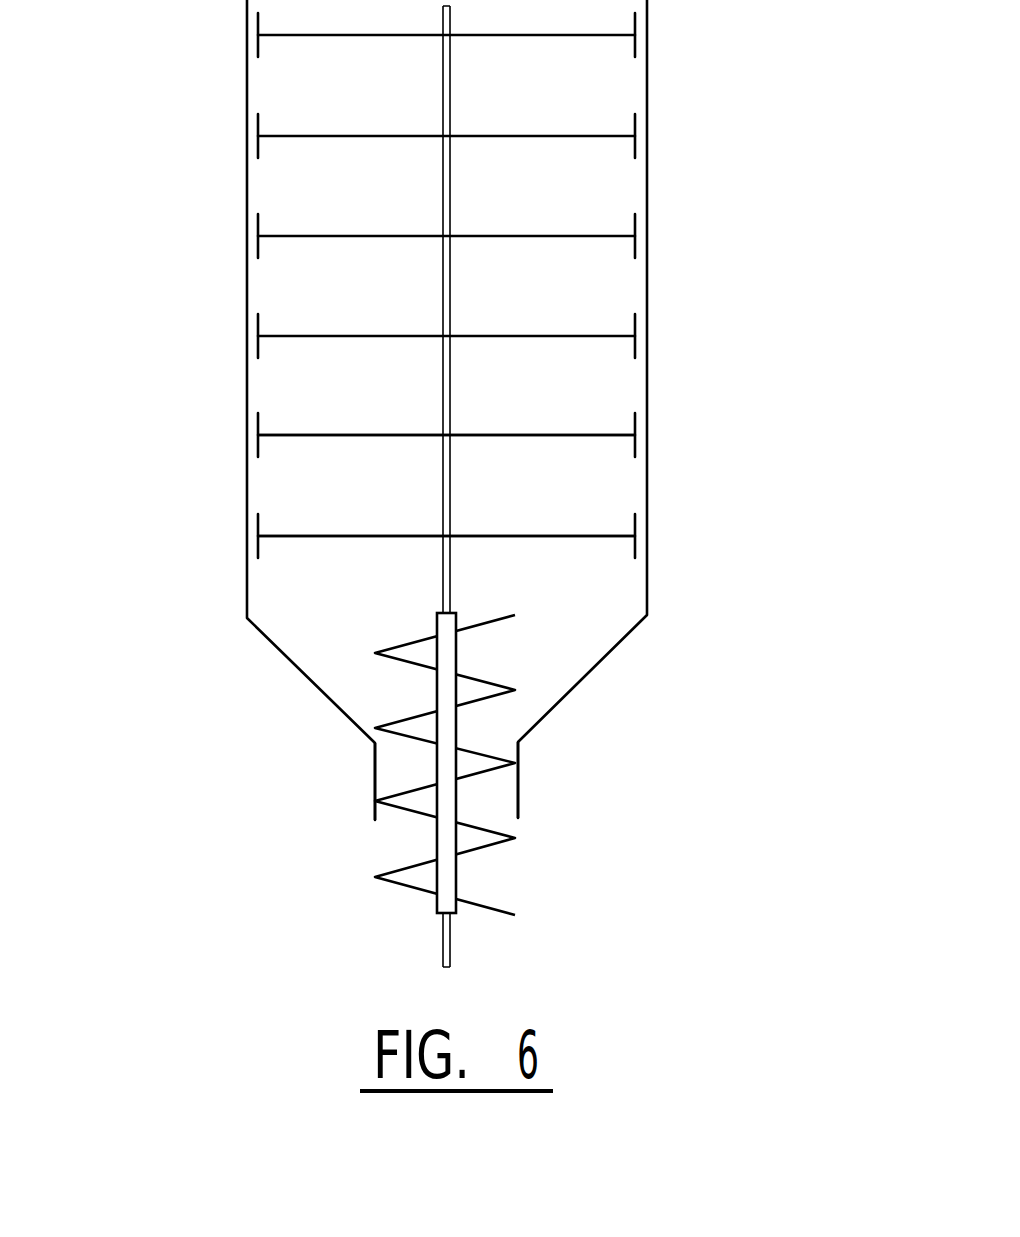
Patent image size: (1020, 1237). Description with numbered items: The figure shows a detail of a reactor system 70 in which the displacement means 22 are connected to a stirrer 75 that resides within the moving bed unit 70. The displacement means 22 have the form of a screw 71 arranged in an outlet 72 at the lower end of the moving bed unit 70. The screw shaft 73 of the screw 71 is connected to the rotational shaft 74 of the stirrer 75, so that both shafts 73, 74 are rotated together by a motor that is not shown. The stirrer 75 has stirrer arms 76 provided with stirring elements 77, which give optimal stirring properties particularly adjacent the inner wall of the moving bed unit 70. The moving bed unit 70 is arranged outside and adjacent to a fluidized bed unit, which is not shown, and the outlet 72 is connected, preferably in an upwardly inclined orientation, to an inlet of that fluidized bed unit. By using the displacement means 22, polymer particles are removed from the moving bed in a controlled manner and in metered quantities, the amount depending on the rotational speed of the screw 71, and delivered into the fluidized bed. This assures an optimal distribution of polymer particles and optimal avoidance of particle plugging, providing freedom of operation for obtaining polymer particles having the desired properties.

The reactor system 70 is at (764, 78).
The stirrer 75 is at (599, 495).
The stirrer arms 76 is at (297, 437).
The stirring elements 77 is at (258, 423).
The rotational shaft 74 is at (450, 563).
The screw shaft 73 is at (457, 648).
The outlet 72 is at (518, 797).
The screw 71 is at (407, 812).
The displacement means 22 is at (481, 790).